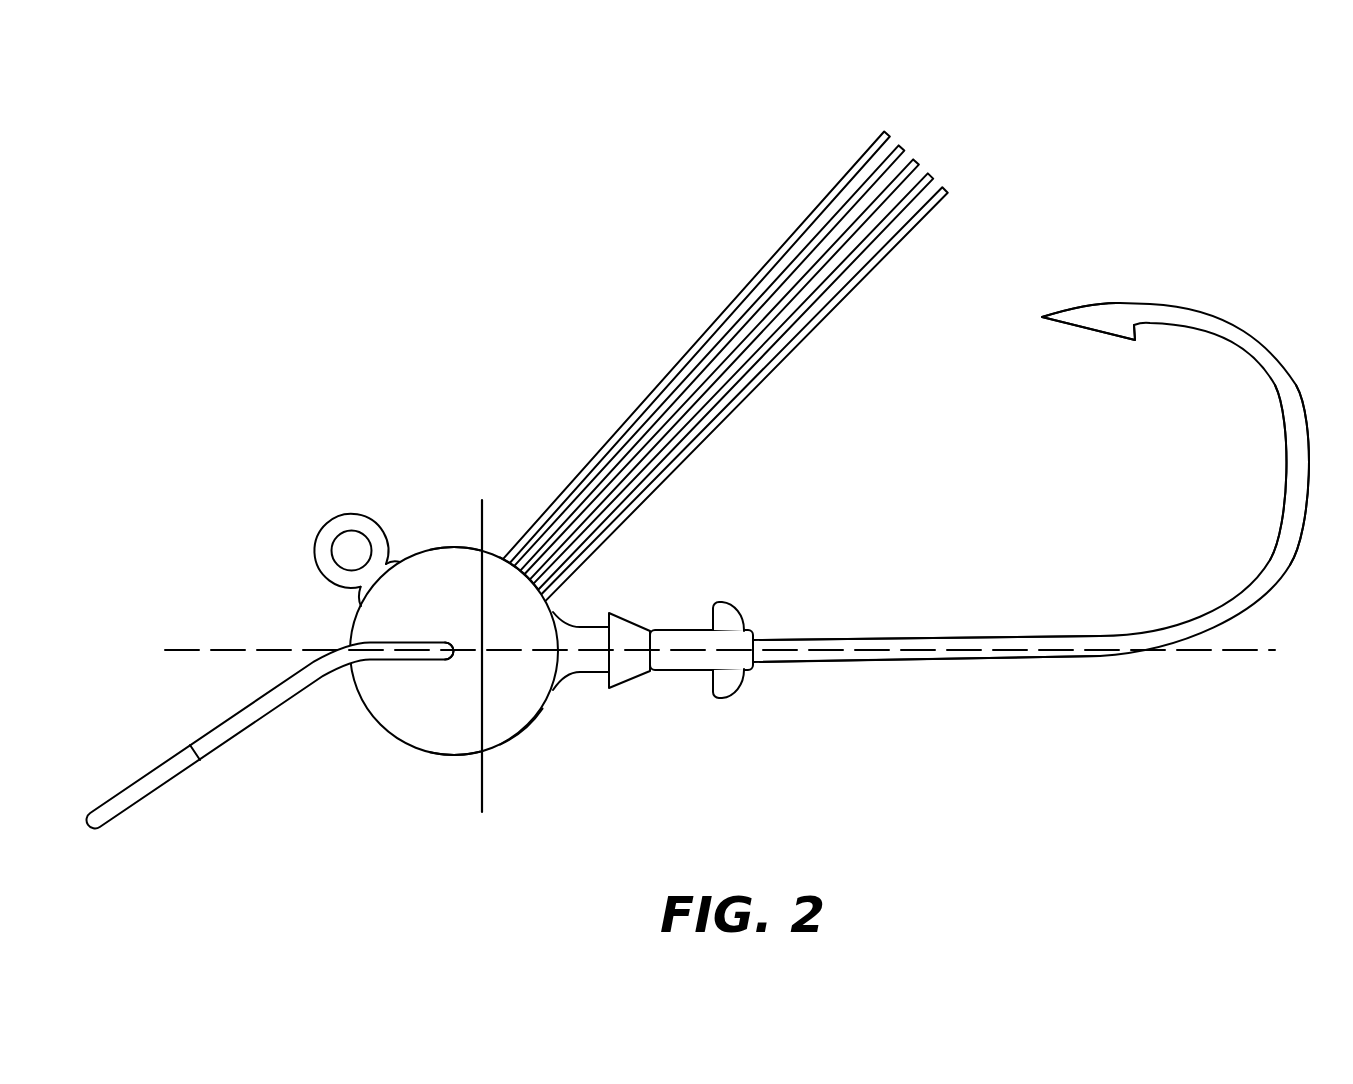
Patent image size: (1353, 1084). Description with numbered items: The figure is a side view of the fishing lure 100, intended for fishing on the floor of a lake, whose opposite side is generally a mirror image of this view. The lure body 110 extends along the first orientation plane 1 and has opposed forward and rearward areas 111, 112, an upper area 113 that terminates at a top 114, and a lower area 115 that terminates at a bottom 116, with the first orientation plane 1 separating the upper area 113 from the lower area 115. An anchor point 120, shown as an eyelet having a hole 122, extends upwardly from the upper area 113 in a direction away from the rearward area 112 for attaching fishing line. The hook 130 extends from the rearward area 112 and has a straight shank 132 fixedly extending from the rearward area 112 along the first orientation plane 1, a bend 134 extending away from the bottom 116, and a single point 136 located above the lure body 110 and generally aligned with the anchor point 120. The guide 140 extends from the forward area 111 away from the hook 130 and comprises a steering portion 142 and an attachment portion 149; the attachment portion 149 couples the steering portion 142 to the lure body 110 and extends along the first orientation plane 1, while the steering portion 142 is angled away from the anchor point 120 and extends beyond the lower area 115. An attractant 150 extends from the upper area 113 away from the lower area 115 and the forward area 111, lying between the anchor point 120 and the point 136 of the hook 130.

The first orientation plane 1 is at (198, 648).
The fishing lure 100 is at (273, 105).
The lure body 110 is at (701, 653).
The forward area 111 is at (338, 632).
The rearward area 112 is at (740, 708).
The upper area 113 is at (501, 532).
The top 114 is at (463, 545).
The lower area 115 is at (538, 732).
The bottom 116 is at (452, 757).
The anchor point 120 is at (316, 544).
The hole 122 is at (318, 514).
The hook 130 is at (1034, 437).
The shank 132 is at (985, 663).
The bend 134 is at (1295, 460).
The point 136 is at (1043, 315).
The guide 140 is at (270, 739).
The steering portion 142 is at (188, 738).
The attachment portion 149 is at (430, 680).
The attractant 150 is at (790, 229).